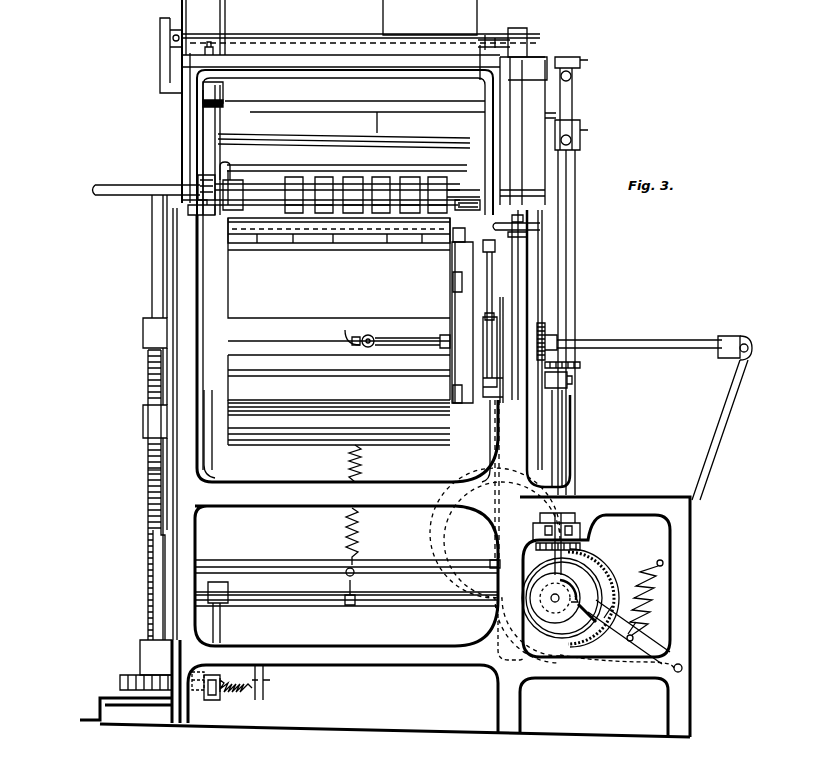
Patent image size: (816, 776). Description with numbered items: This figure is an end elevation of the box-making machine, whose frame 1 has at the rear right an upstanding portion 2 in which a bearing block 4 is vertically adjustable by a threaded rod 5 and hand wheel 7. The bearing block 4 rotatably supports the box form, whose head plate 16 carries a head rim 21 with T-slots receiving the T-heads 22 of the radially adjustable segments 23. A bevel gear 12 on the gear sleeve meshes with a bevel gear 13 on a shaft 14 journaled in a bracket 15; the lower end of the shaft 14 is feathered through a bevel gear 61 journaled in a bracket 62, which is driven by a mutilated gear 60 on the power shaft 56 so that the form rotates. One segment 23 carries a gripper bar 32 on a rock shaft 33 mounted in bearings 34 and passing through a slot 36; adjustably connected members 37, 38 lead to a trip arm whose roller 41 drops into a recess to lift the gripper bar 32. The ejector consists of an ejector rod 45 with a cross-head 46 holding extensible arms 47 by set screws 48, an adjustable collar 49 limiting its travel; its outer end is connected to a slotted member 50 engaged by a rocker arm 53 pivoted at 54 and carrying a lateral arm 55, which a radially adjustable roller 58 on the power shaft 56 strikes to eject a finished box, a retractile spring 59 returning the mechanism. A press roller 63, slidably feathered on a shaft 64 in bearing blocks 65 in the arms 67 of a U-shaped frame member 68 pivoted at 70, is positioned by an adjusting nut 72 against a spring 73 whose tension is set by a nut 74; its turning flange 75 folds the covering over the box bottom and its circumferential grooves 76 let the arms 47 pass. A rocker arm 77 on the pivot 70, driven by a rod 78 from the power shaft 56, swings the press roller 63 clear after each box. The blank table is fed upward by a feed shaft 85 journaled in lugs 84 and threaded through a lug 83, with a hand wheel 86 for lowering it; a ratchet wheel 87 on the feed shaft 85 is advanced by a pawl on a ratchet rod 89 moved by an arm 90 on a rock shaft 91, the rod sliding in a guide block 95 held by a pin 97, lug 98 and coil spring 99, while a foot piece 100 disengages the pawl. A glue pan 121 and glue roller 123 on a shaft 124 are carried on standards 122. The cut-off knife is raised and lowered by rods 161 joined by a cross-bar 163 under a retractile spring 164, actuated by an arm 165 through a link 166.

The frame 1 is at (625, 495).
The upstanding portion 2 is at (540, 308).
The bearing block 4 is at (518, 296).
The threaded rod 5 is at (567, 200).
The hand wheel 7 is at (542, 226).
The bevel gear 12 is at (548, 336).
The bevel gear 13 is at (580, 366).
The shaft 14 is at (566, 423).
The bracket 15 is at (574, 384).
The head plate 16 is at (468, 302).
The head rim 21 is at (446, 368).
The T-heads 22 is at (452, 276).
The segments 23 is at (339, 347).
The gripper bar 32 is at (333, 238).
The rock shaft 33 is at (466, 236).
The bearings 34 is at (247, 240).
The slot 36 is at (496, 246).
The adjustably connected member 37 is at (494, 290).
The adjustably connected member 38 is at (485, 338).
The roller 41 is at (500, 400).
The ejector rod 45 is at (652, 340).
The cross-head 46 is at (345, 330).
The extensible arms 47 is at (368, 334).
The set screws 48 is at (352, 340).
The adjustable collar 49 is at (442, 342).
The member 50 is at (742, 330).
The rocker arm 53 is at (728, 420).
The pivot 54 is at (682, 666).
The laterally projecting arm 55 is at (642, 660).
The power shaft 56 is at (550, 595).
The radially adjustable roller 58 is at (555, 598).
The retractile spring 59 is at (643, 597).
The mutilated gear 60 is at (590, 580).
The bevel gear 61 is at (578, 548).
The bracket 62 is at (568, 516).
The press roller 63 is at (294, 177).
The shaft 64 is at (465, 200).
The bearing blocks 65 is at (186, 182).
The arms 67 is at (195, 128).
The U-shaped frame member 68 is at (312, 62).
The pivot 70 is at (205, 95).
The adjusting nut 72 is at (458, 178).
The spring 73 is at (199, 180).
The nut 74 is at (190, 212).
The turning flange 75 is at (226, 175).
The circumferential grooves 76 is at (355, 178).
The rocker arm 77 is at (580, 112).
The rod 78 is at (574, 250).
The lug 83 is at (142, 420).
The lugs 84 is at (142, 330).
The feed shaft 85 is at (148, 478).
The hand wheel 86 is at (95, 190).
The ratchet wheel 87 is at (120, 678).
The ratchet rod 89 is at (200, 698).
The arm 90 is at (222, 618).
The rock shaft 91 is at (308, 594).
The guide block 95 is at (214, 700).
The pin 97 is at (266, 682).
The lug 98 is at (258, 668).
The coil spring 99 is at (236, 692).
The foot piece 100 is at (134, 705).
The glue pan 121 is at (436, 52).
The standards 122 is at (525, 35).
The glue roller 123 is at (430, 17).
The shaft 124 is at (500, 36).
The rods 161 is at (208, 460).
The cross-bar 163 is at (398, 566).
The retractile spring 164 is at (348, 462).
The arm 165 is at (424, 607).
The link 166 is at (346, 570).